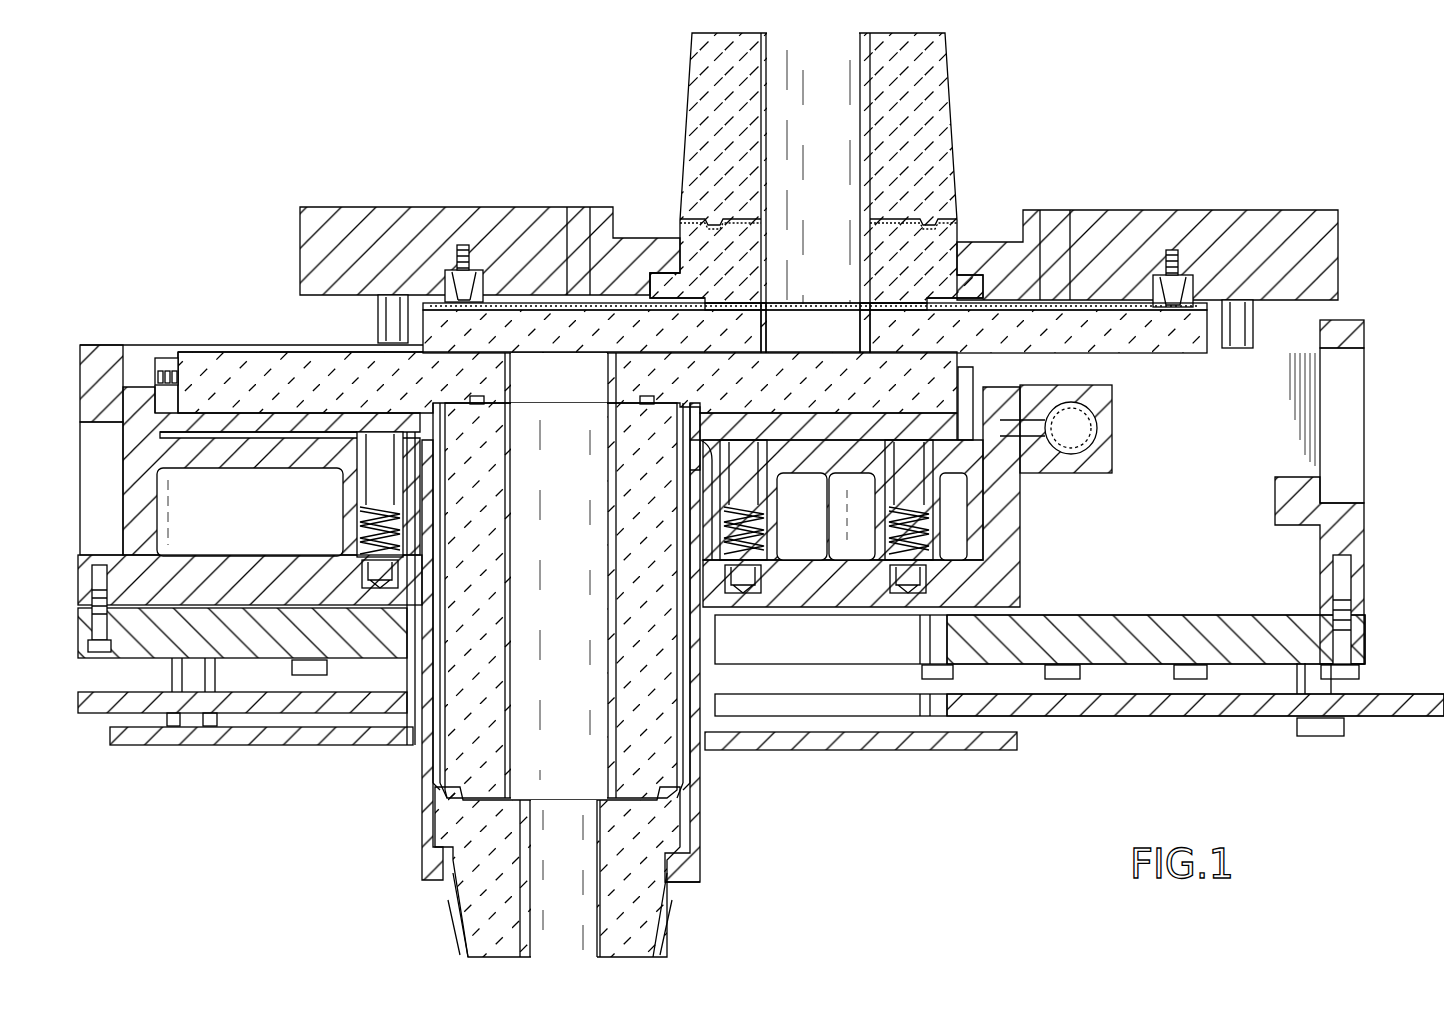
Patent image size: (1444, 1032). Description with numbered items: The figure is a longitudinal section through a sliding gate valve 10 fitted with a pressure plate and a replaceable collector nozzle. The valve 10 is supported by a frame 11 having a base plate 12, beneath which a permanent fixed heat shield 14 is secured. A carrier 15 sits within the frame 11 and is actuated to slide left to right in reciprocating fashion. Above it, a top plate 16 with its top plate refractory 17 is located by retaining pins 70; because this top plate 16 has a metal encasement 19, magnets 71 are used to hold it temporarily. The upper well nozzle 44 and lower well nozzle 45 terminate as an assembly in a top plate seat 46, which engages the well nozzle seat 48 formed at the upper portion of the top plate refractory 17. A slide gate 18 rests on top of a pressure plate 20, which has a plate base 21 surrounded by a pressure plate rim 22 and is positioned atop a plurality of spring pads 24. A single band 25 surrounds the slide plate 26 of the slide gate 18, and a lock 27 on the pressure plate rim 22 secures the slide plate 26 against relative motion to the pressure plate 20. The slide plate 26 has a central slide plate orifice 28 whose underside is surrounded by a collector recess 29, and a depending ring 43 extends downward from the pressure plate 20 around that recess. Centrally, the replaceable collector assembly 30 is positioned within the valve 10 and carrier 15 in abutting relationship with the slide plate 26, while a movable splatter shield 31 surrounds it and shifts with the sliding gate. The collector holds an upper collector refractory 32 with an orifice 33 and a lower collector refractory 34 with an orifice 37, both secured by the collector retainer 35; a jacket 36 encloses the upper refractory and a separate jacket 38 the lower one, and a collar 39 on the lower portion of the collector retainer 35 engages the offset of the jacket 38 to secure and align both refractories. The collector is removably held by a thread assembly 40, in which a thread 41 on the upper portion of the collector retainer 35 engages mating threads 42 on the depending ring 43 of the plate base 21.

The valve 10 is at (1390, 294).
The frame 11 is at (1366, 534).
The base plate 12 is at (1366, 634).
The heat shield 14 is at (1385, 696).
The carrier 15 is at (1020, 532).
The top plate 16 is at (395, 331).
The top plate refractory 17 is at (552, 342).
The slide gate 18 is at (262, 342).
The metal encasement 19 is at (1212, 350).
The pressure plate 20 is at (176, 343).
The plate base 21 is at (290, 420).
The pressure plate rim 22 is at (156, 365).
The spring pads 24 is at (389, 478).
The band 25 is at (180, 378).
The slide plate 26 is at (311, 393).
The lock 27 is at (150, 400).
The slide plate orifice 28 is at (571, 383).
The collector recess 29 is at (478, 400).
The collector assembly 30 is at (705, 805).
The splatter shield 31 is at (985, 752).
The upper collector refractory 32 is at (657, 541).
The orifice 33 is at (565, 541).
The lower collector refractory 34 is at (642, 873).
The collector retainer 35 is at (700, 850).
The jacket 36 is at (690, 786).
The orifice 37 is at (565, 873).
The jacket 38 is at (672, 905).
The collar 39 is at (690, 880).
The thread assembly 40 is at (712, 412).
The thread 41 is at (690, 455).
The mating threads 42 is at (740, 418).
The depending ring 43 is at (430, 462).
The upper well nozzle 44 is at (950, 168).
The lower well nozzle 45 is at (960, 232).
The top plate seat 46 is at (945, 320).
The well nozzle seat 48 is at (975, 392).
The retaining pins 70 is at (376, 310).
The magnets 71 is at (470, 272).